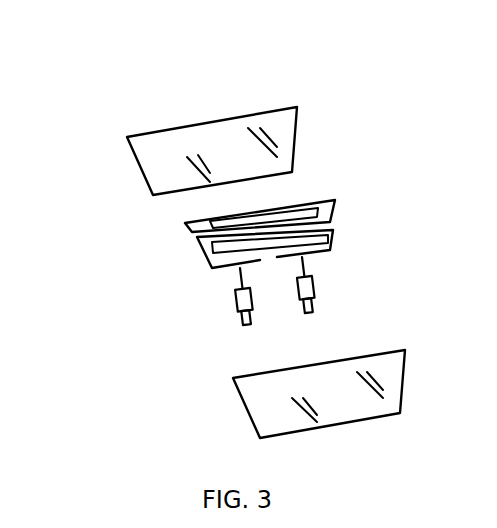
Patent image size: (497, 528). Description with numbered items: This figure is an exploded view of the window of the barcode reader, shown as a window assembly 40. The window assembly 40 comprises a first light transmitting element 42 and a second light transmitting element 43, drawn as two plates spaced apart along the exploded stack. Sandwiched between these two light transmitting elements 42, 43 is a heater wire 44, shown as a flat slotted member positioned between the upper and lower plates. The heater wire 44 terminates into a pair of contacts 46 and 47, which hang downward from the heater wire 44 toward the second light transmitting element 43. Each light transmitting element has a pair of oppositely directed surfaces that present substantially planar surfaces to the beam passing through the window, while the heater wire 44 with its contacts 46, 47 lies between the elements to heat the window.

The window assembly 40 is at (151, 70).
The first light transmitting element 42 is at (226, 135).
The second light transmitting element 43 is at (343, 373).
The heater wire 44 is at (322, 198).
The contact 46 is at (236, 302).
The contact 47 is at (318, 281).